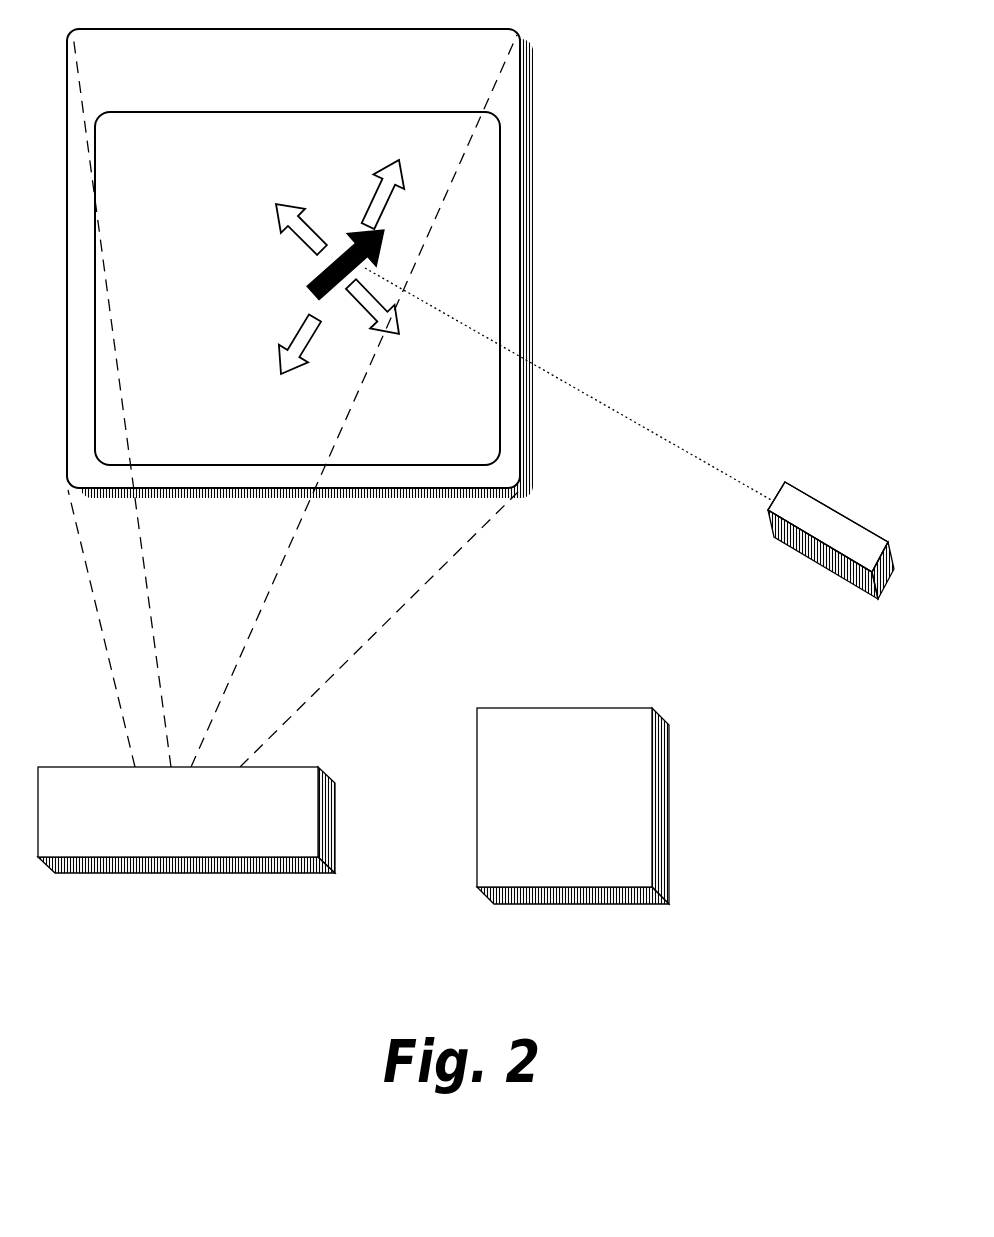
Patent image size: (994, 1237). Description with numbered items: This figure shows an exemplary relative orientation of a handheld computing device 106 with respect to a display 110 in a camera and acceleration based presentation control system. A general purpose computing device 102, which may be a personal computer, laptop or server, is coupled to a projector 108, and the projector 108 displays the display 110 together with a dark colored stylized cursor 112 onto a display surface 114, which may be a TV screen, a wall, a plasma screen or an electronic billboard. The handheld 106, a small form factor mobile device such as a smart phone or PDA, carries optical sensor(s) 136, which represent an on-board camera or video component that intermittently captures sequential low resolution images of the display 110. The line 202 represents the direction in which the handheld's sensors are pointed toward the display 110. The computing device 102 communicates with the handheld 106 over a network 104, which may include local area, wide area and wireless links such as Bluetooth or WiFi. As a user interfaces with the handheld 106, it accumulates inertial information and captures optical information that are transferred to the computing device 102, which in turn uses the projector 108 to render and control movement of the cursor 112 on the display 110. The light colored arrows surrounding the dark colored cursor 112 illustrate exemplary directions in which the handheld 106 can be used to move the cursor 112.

The general purpose computing device 102 is at (546, 811).
The network 104 is at (748, 686).
The handheld computing device 106 is at (806, 538).
The projector 108 is at (159, 835).
The display 110 is at (372, 147).
The stylized cursor 112 is at (318, 283).
The display surface 114 is at (383, 62).
The optical sensor(s) 136 is at (765, 518).
The line representing direction of handheld sensor(s) 202 is at (557, 379).